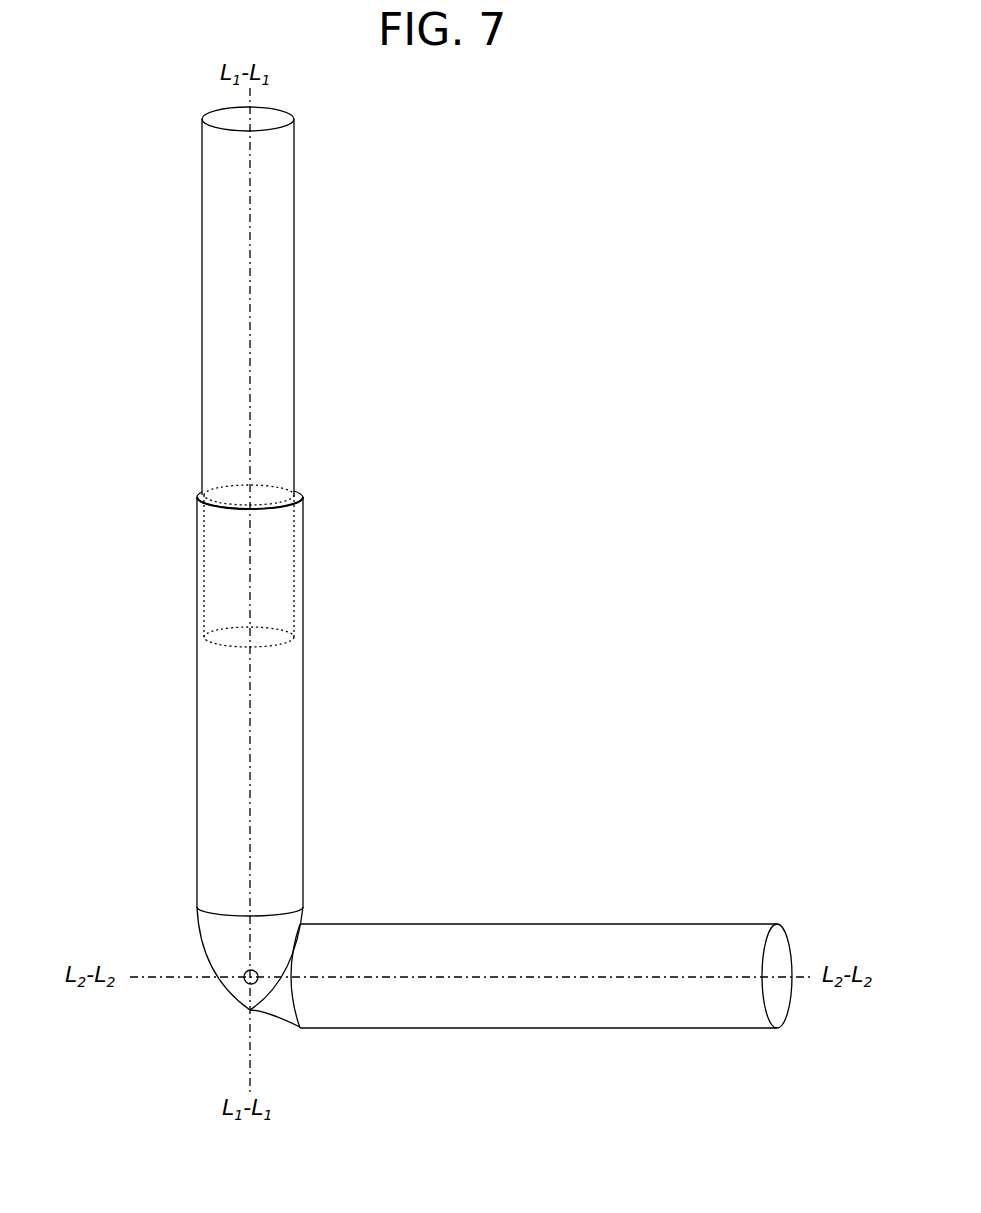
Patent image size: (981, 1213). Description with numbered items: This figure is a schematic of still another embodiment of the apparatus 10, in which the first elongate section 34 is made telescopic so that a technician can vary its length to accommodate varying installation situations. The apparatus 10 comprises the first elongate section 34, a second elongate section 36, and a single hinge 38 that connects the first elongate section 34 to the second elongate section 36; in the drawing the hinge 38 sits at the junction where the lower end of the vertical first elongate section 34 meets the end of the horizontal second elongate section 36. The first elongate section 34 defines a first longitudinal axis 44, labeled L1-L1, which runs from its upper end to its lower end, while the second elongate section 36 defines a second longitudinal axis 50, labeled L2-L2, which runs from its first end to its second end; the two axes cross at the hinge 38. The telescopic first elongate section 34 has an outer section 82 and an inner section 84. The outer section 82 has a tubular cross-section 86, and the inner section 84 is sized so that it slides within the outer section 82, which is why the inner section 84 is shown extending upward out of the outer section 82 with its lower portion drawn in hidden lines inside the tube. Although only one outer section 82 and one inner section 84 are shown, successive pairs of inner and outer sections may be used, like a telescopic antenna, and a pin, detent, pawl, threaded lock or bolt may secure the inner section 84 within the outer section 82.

The apparatus 10 is at (598, 178).
The inner section 84 is at (294, 301).
The tubular cross-section 86 is at (303, 495).
The outer section 82 is at (303, 565).
The first elongate section 34 is at (303, 655).
The first longitudinal axis 44 is at (258, 801).
The second elongate section 36 is at (503, 923).
The single hinge 38 is at (245, 982).
The second longitudinal axis 50 is at (528, 977).